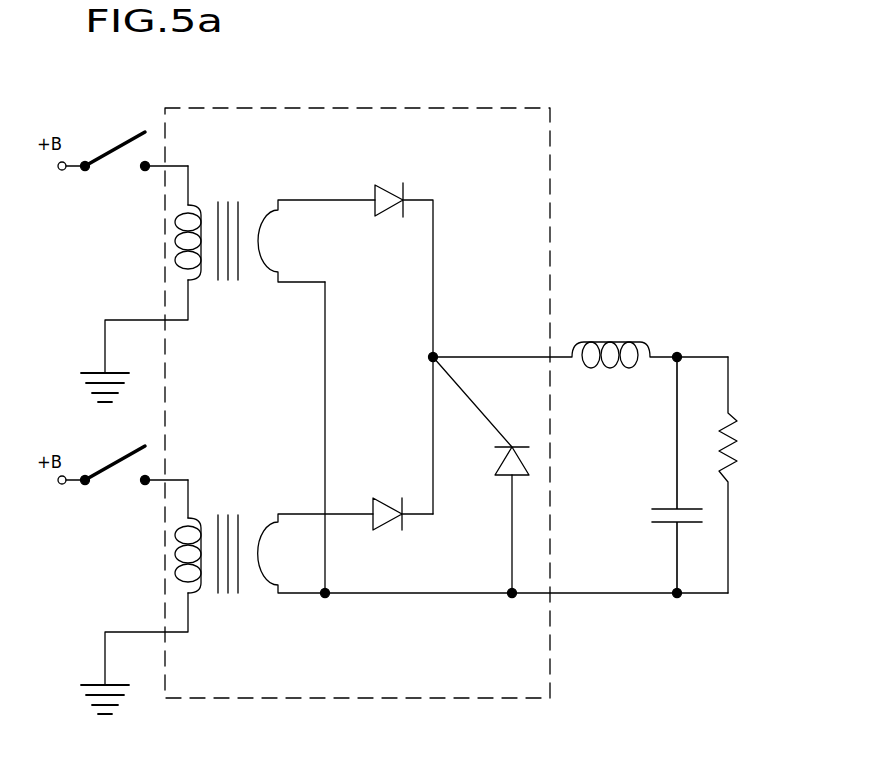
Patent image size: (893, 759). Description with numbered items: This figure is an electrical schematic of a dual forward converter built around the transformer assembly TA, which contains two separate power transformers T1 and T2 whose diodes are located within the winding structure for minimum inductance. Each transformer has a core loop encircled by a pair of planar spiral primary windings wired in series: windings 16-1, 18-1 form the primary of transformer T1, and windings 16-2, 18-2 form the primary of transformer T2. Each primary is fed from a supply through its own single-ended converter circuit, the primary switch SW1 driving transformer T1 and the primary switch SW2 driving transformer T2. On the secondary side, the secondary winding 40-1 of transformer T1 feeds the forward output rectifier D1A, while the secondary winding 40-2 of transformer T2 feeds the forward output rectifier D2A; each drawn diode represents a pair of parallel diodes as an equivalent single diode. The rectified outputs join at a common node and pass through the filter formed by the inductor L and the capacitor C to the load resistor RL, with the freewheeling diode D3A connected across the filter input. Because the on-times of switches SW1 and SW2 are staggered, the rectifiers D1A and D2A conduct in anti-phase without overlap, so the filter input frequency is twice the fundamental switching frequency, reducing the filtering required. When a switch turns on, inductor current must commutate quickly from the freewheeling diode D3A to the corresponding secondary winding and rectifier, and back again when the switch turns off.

The primary winding 16-1 is at (119, 249).
The primary winding 18-1 is at (177, 223).
The primary winding 16-2 is at (116, 566).
The primary winding 18-2 is at (177, 537).
The secondary winding 40-1 is at (262, 224).
The secondary winding 40-2 is at (258, 558).
The forward output rectifier diode D1A is at (376, 190).
The forward output rectifier diode D2A is at (383, 503).
The freewheeling diode D3A is at (507, 462).
The primary switch SW1 is at (118, 146).
The primary switch SW2 is at (118, 460).
The power transformer T1 is at (226, 223).
The power transformer T2 is at (223, 532).
The filter inductor L is at (580, 339).
The filter capacitor C is at (673, 475).
The load resistor RL is at (745, 475).
The transformer assembly TA is at (472, 105).